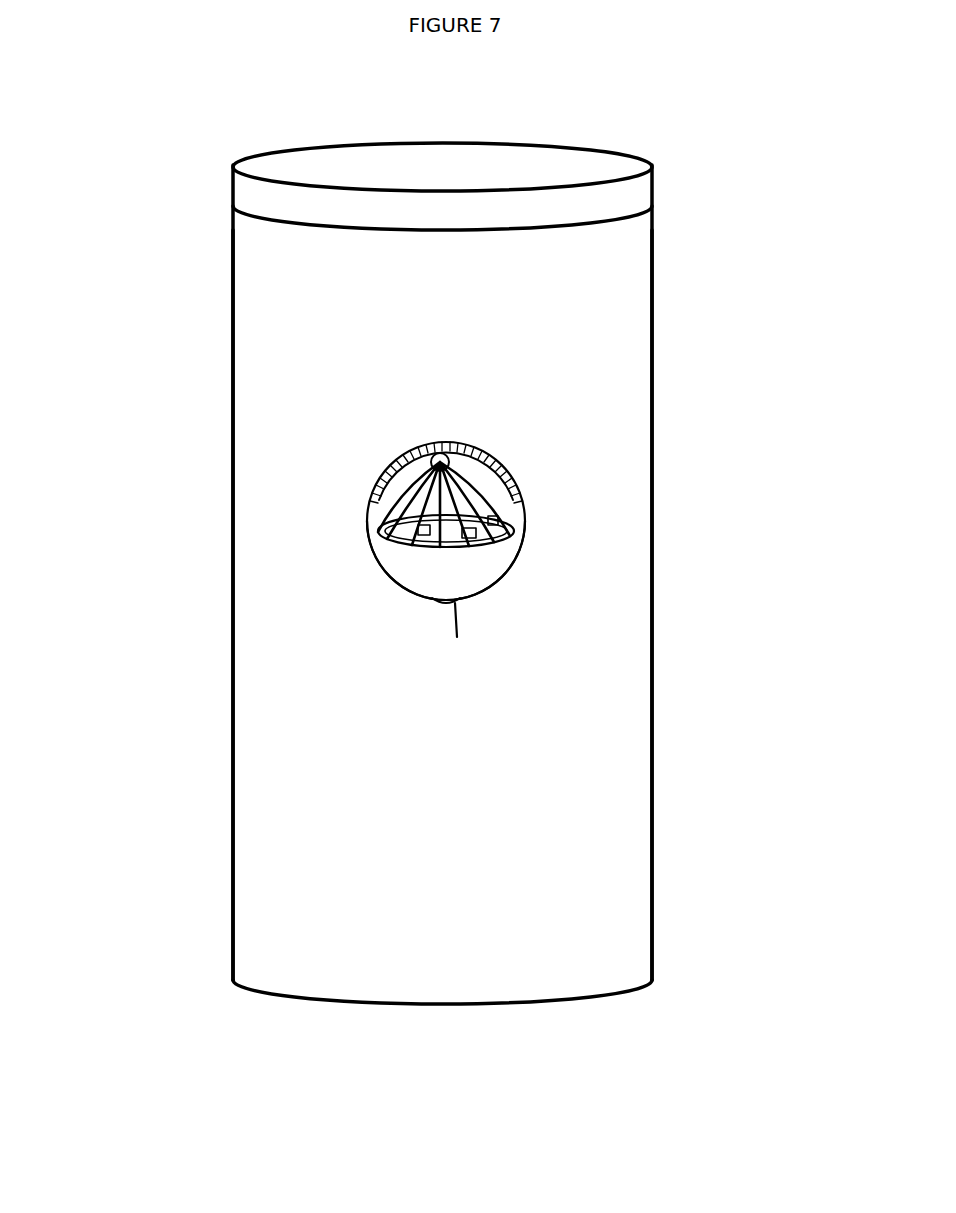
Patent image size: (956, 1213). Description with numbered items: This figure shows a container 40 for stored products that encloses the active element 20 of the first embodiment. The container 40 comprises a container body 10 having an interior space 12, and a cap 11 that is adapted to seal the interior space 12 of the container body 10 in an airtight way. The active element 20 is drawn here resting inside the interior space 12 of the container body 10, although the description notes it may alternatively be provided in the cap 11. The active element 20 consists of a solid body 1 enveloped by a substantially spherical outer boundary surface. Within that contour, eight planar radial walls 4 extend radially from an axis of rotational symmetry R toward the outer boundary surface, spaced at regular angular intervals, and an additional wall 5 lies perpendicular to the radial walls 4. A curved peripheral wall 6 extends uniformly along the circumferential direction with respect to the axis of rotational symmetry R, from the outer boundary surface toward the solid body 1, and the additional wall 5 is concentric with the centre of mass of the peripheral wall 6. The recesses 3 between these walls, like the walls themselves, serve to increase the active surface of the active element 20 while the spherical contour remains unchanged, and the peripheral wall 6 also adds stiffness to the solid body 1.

The container 40 is at (166, 205).
The container body 10 is at (652, 857).
The cap 11 is at (653, 193).
The interior space 12 is at (615, 708).
The solid body 1 is at (477, 506).
The recesses 3 is at (392, 458).
The radial walls 4 is at (497, 467).
The axis of rotational symmetry R is at (440, 447).
The peripheral wall 6 is at (528, 503).
The additional wall 5 is at (510, 517).
The active element 20 is at (383, 620).